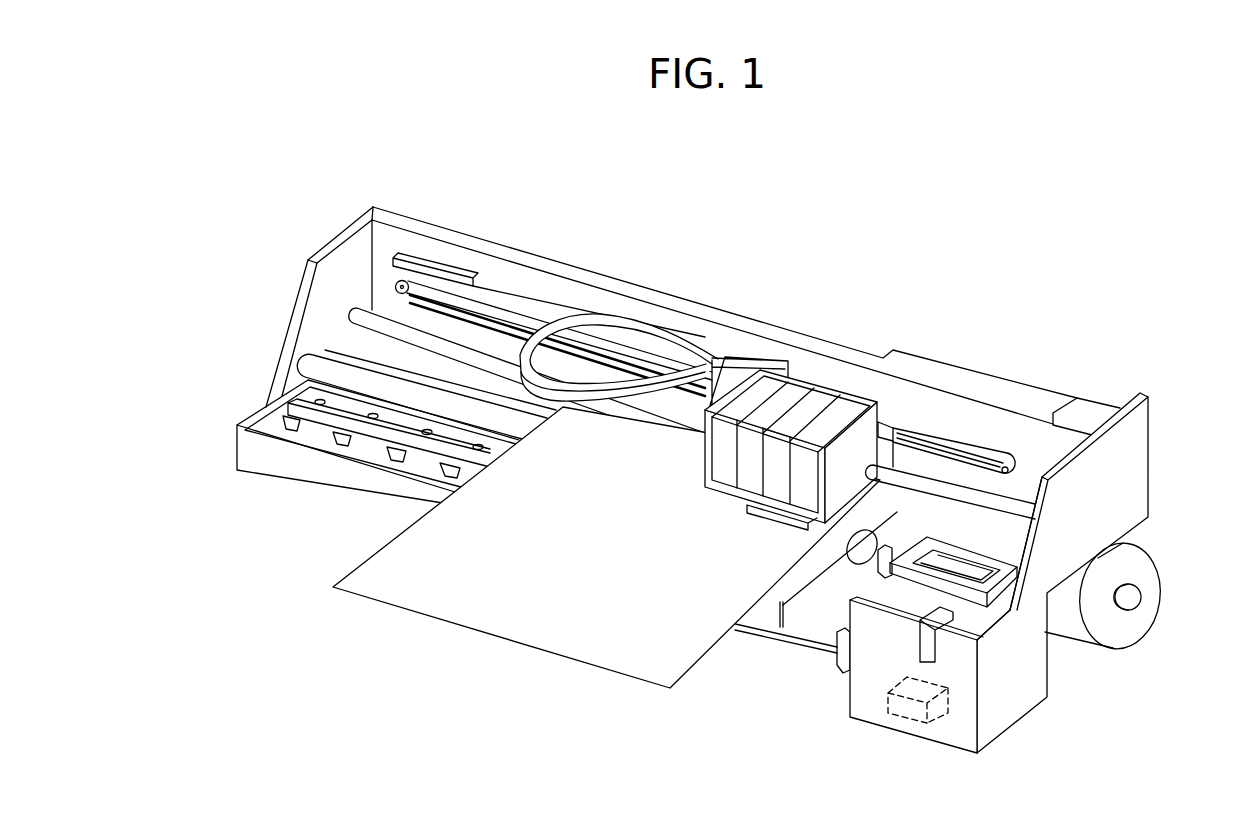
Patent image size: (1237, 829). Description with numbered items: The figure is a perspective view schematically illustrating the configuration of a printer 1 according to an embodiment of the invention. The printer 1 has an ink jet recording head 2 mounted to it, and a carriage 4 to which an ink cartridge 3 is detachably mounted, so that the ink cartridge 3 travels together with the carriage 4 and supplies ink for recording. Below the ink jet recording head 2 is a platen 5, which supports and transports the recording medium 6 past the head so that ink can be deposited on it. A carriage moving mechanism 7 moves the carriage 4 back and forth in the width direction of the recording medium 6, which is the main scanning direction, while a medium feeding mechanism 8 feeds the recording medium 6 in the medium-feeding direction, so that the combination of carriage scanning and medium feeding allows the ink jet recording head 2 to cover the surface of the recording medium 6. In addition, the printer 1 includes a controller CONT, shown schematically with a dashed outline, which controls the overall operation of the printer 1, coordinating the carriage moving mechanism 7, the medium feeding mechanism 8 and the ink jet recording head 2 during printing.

The printer 1 is at (596, 265).
The ink jet recording head 2 is at (757, 512).
The ink cartridge 3 is at (842, 415).
The carriage 4 is at (897, 420).
The platen 5 is at (313, 432).
The recording medium 6 is at (507, 617).
The carriage moving mechanism 7 is at (987, 440).
The medium feeding mechanism 8 is at (1060, 657).
The controller CONT is at (910, 723).